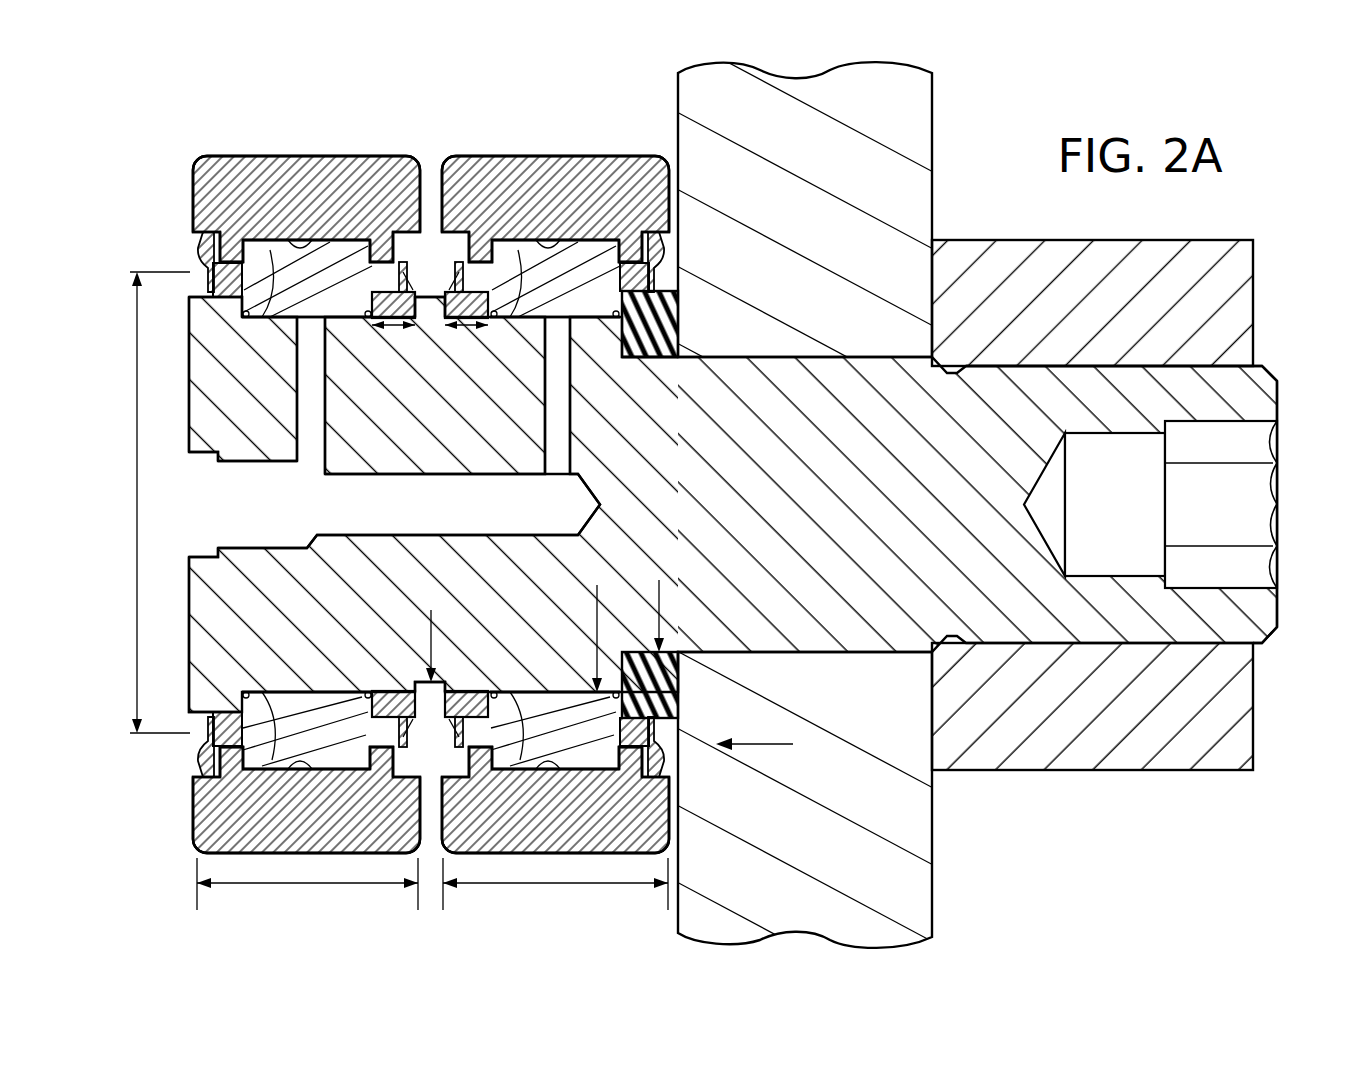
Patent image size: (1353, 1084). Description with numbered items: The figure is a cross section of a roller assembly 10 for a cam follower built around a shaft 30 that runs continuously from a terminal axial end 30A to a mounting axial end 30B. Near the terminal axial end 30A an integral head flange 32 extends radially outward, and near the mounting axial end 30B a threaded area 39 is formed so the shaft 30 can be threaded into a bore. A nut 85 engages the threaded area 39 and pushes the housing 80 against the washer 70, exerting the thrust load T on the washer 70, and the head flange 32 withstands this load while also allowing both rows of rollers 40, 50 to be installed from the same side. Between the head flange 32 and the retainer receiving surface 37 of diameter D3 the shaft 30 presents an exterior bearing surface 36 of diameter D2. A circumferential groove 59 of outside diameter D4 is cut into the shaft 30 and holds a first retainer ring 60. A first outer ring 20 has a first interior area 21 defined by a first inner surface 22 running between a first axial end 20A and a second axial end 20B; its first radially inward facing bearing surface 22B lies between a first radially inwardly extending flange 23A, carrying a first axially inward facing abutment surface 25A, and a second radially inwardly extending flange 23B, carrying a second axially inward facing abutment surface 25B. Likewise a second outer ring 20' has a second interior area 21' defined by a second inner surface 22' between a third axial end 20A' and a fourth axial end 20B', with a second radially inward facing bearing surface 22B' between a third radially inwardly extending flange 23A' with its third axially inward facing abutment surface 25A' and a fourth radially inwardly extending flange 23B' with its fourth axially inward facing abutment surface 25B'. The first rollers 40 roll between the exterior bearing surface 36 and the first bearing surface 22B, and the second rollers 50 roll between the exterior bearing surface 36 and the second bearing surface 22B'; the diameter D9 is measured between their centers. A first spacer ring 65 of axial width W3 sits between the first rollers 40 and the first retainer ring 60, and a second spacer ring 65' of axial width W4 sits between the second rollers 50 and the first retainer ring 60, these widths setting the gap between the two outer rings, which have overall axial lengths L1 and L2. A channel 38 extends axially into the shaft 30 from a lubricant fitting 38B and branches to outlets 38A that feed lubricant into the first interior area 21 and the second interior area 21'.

The roller assembly 10 is at (552, 71).
The first outer ring 20 is at (306, 479).
The second outer ring 20' is at (555, 476).
The first axial end 20A is at (267, 504).
The third axial end 20A' is at (595, 504).
The second axial end 20B is at (327, 428).
The fourth axial end 20B' is at (539, 400).
The first interior area 21 is at (214, 476).
The second interior area 21' is at (698, 504).
The first inner surface 22 is at (274, 504).
The second inner surface 22' is at (603, 488).
The first radially inward facing bearing surface 22B is at (249, 442).
The second radially inward facing bearing surface 22B' is at (611, 428).
The first radially inwardly extending flange 23A is at (300, 504).
The third radially inwardly extending flange 23A' is at (625, 415).
The second radially inwardly extending flange 23B is at (306, 418).
The fourth radially inwardly extending flange 23B' is at (537, 431).
The first axially inward facing abutment surface 25A is at (246, 504).
The third axially inward facing abutment surface 25A' is at (645, 425).
The second axially inward facing abutment surface 25B is at (390, 422).
The fourth axially inward facing abutment surface 25B' is at (510, 430).
The shaft 30 is at (795, 345).
The terminal axial end 30A is at (190, 640).
The mounting axial end 30B is at (1280, 592).
The head flange 32 is at (230, 300).
The exterior bearing surface 36 is at (352, 316).
The retainer receiving surface 37 is at (664, 355).
The channel 38 is at (368, 538).
The outlet 38A is at (318, 384).
The lubricant fitting 38B is at (193, 512).
The threaded area 39 is at (1252, 345).
The first rollers 40 is at (352, 236).
The second rollers 50 is at (628, 220).
The circumferential groove 59 is at (432, 336).
The first retainer ring 60 is at (448, 322).
The first spacer ring 65 is at (308, 504).
The second spacer ring 65' is at (570, 504).
The washer 70 is at (665, 300).
The housing 80 is at (918, 112).
The nut 85 is at (1240, 268).
The diameter D9 is at (137, 430).
The outside diameter D4 is at (431, 612).
The diameter D2 is at (597, 612).
The diameter D3 is at (660, 606).
The axial width W3 is at (372, 328).
The axial width W4 is at (478, 328).
The overall axial length L1 is at (330, 883).
The overall axial length L2 is at (565, 883).
The thrust load T is at (770, 745).